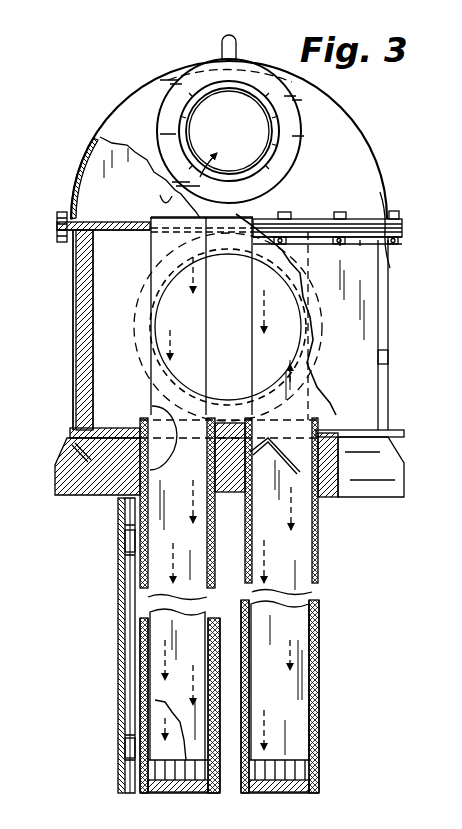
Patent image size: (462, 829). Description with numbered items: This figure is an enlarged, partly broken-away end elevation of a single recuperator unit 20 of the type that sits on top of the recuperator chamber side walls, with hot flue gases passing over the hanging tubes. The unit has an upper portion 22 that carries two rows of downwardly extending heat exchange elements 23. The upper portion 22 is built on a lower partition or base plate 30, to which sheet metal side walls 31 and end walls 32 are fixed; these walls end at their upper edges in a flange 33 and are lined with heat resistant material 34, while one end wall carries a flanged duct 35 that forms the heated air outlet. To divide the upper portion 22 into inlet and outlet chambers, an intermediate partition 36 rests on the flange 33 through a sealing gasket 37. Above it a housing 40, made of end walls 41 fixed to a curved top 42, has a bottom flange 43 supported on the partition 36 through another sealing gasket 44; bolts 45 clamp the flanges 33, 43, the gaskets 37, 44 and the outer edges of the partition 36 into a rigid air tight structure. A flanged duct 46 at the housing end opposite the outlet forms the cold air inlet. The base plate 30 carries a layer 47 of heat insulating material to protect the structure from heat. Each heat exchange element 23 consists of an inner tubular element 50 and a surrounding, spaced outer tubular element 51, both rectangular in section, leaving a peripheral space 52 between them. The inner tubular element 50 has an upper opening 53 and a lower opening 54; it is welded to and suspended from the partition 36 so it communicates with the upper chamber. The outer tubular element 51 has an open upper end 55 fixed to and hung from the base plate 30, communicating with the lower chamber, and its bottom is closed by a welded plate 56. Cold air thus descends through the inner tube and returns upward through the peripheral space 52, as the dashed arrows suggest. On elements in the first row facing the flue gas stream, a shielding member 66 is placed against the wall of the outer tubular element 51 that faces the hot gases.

The recuperator unit 20 is at (392, 332).
The upper portion 22 is at (392, 386).
The heat exchange element 23 is at (319, 556).
The base plate 30 is at (70, 432).
The side walls 31 is at (74, 352).
The end walls 32 is at (136, 282).
The flange 33 is at (392, 262).
The heat resistant material 34 is at (82, 280).
The flanged duct 35 is at (228, 395).
The intermediate partition 36 is at (55, 226).
The sealing gasket 37 is at (58, 237).
The housing 40 is at (343, 108).
The end walls 41 is at (348, 142).
The curved top 42 is at (86, 160).
The bottom flange 43 is at (380, 210).
The sealing gasket 44 is at (404, 218).
The bolts 45 is at (60, 210).
The flanged duct 46 is at (170, 84).
The layer of heat insulating material 47 is at (56, 486).
The inner tubular element 50 is at (158, 574).
The outer tubular element 51 is at (140, 690).
The peripheral space 52 is at (320, 692).
The opening 53 is at (160, 206).
The opening 54 is at (158, 785).
The open upper end 55 is at (158, 416).
The welded plate 56 is at (256, 788).
The shielding member 66 is at (118, 628).